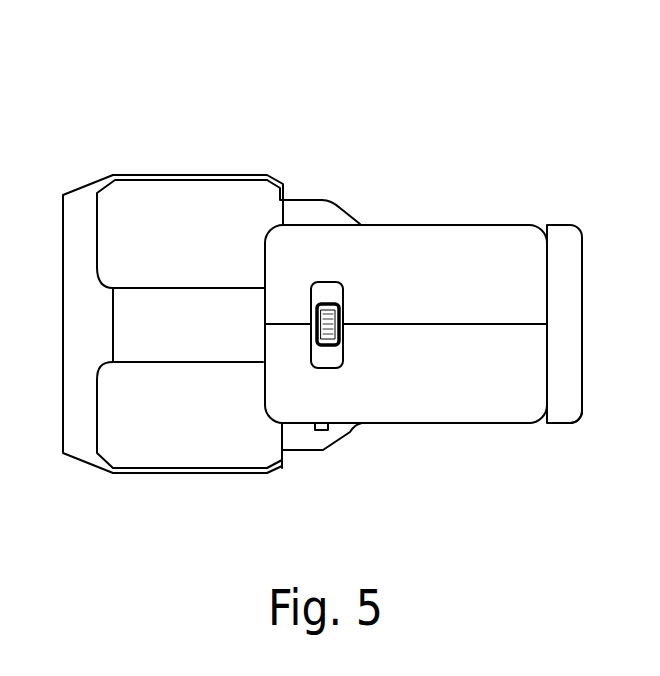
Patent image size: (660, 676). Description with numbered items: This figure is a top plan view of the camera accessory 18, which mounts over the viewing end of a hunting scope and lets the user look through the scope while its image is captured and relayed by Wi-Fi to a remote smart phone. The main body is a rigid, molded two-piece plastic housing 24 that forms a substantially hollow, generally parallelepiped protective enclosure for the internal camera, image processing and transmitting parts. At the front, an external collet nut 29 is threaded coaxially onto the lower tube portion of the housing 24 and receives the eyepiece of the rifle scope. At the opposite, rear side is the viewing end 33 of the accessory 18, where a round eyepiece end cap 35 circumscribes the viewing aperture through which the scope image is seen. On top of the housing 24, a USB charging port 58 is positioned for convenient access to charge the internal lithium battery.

The camera accessory 18 is at (351, 250).
The collet nut 29 is at (135, 200).
The housing 24 is at (476, 212).
The USB charging port 58 is at (340, 325).
The eyepiece end cap 35 is at (568, 328).
The viewing end 33 is at (586, 437).